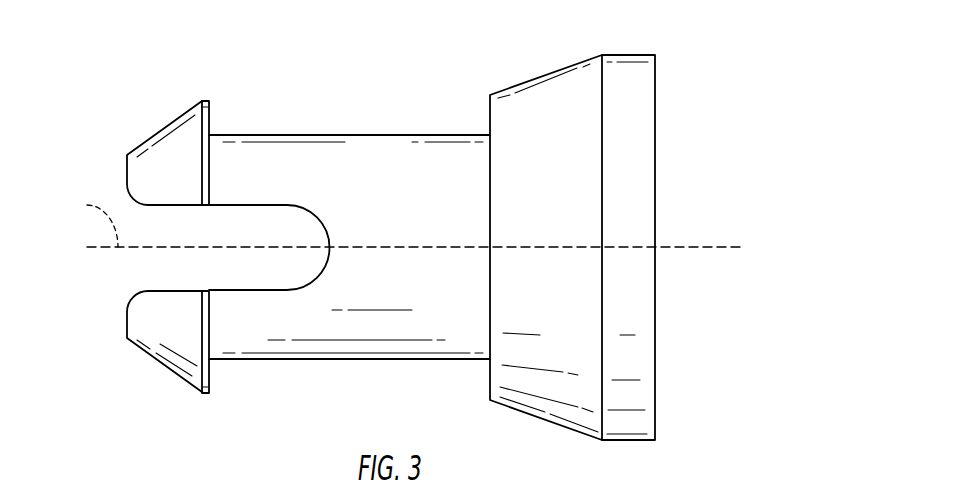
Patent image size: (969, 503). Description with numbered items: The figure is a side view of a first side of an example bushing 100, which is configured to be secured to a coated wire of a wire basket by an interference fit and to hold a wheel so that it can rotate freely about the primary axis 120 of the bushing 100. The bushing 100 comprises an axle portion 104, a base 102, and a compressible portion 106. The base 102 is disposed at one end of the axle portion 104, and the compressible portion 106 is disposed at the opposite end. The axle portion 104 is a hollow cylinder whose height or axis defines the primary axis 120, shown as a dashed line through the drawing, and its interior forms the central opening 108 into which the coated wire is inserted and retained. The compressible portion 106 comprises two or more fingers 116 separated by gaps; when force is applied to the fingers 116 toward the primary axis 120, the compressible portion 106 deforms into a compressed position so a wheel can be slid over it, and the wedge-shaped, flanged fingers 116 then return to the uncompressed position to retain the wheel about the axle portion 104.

The bushing 100 is at (415, 59).
The base 102 is at (562, 413).
The axle portion 104 is at (420, 332).
The compressible portion 106 is at (210, 373).
The central opening 108 is at (269, 240).
The fingers 116 is at (187, 335).
The primary axis 120 is at (85, 222).